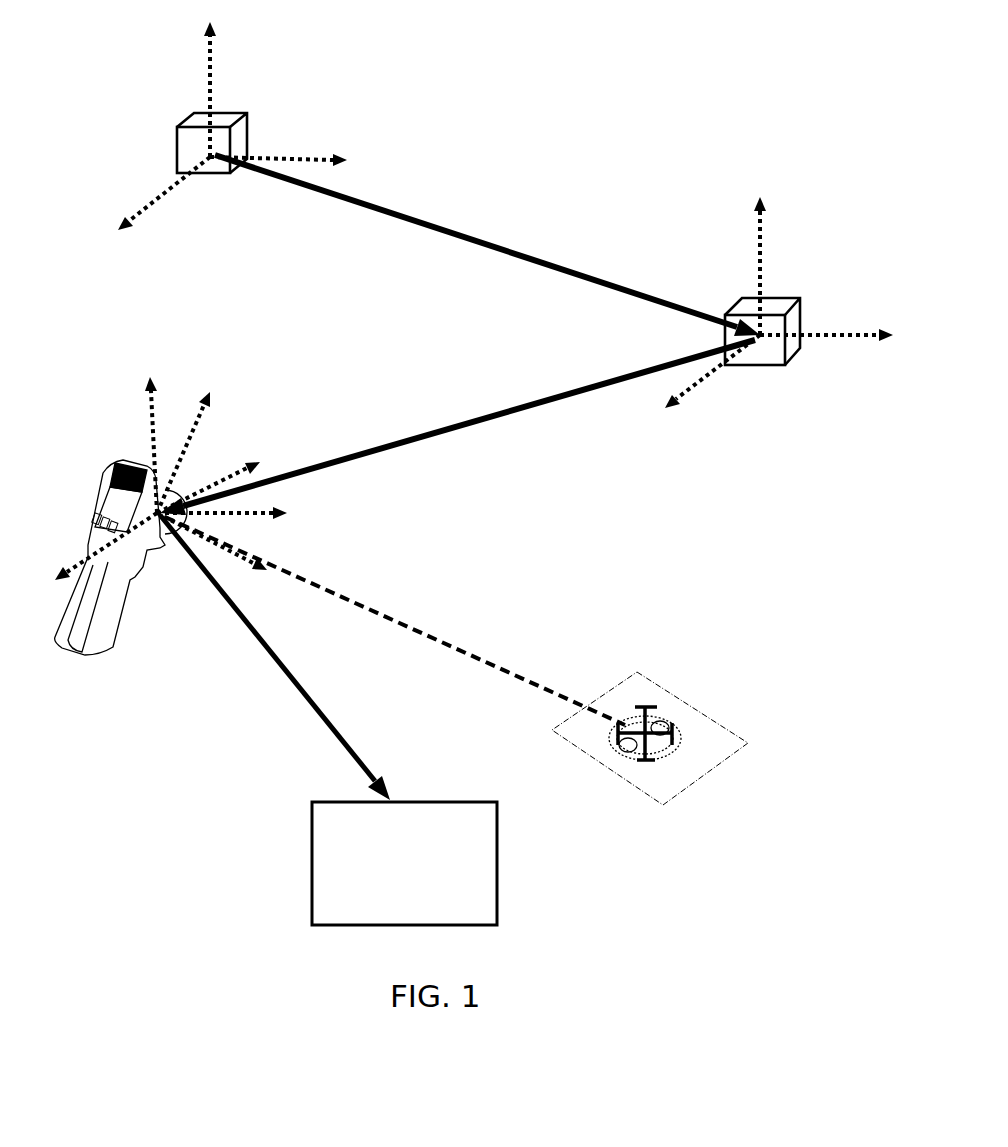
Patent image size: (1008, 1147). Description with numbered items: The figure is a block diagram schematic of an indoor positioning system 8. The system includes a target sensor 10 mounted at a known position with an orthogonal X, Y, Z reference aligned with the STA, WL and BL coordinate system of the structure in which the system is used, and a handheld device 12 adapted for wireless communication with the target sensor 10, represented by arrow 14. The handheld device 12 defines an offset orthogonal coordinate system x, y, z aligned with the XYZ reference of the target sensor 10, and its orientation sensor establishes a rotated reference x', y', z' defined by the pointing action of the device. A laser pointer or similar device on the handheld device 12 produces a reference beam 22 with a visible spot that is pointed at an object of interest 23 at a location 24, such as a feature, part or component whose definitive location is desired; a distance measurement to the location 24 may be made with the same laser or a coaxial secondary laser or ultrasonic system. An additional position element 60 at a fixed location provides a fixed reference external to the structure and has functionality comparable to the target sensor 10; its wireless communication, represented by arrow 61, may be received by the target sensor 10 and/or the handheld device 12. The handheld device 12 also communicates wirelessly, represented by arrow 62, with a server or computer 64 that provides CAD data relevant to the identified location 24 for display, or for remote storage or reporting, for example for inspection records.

The indoor positioning system 8 is at (610, 525).
The target sensor 10 is at (766, 355).
The handheld device 12 is at (127, 583).
The arrow 14 is at (468, 425).
The reference beam 22 is at (330, 583).
The object of interest 23 is at (652, 745).
The location 24 is at (655, 725).
The additional position element 60 is at (228, 118).
The arrow 61 is at (402, 210).
The arrow 62 is at (315, 703).
The server or computer 64 is at (483, 830).